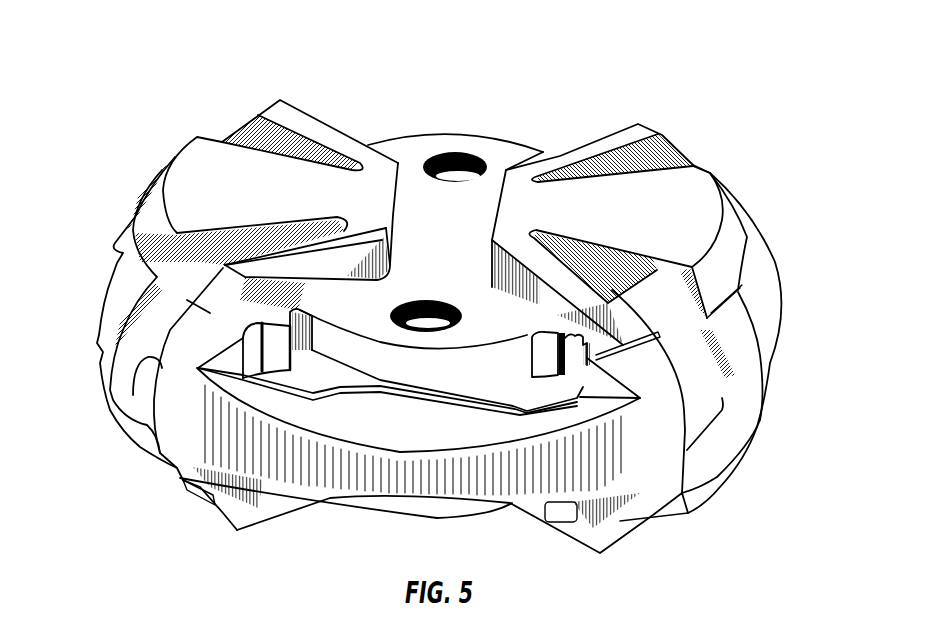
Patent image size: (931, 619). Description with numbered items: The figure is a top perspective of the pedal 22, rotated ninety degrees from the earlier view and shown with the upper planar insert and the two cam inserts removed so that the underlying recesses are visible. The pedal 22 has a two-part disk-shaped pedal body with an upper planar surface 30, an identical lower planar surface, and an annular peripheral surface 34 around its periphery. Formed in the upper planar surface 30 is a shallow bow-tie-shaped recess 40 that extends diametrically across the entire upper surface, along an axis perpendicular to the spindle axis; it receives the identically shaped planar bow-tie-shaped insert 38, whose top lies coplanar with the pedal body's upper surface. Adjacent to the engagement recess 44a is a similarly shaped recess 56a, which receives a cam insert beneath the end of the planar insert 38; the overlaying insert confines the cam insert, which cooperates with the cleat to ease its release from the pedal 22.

The pedal 22 is at (136, 57).
The upper planar surface 30 is at (730, 223).
The annular peripheral surface 34 is at (753, 398).
The planar bow-tie-shaped insert 38 is at (710, 175).
The shallow recess 40 is at (466, 212).
The engagement recess 44a is at (413, 425).
The cam insert recess 56a is at (560, 388).